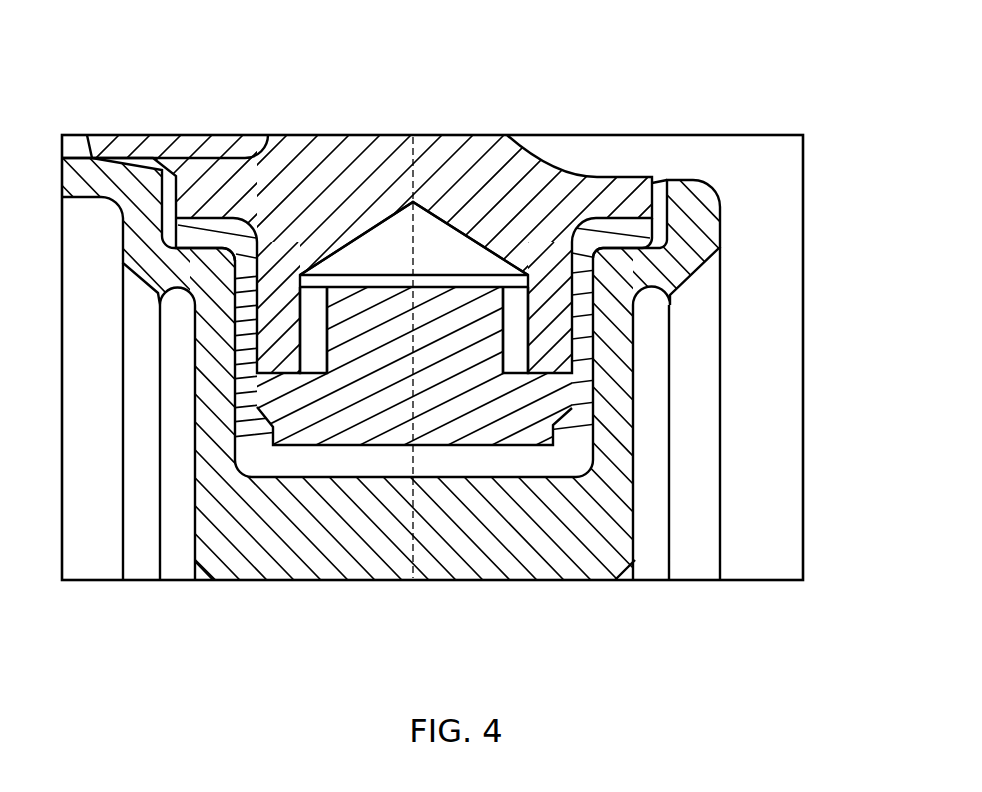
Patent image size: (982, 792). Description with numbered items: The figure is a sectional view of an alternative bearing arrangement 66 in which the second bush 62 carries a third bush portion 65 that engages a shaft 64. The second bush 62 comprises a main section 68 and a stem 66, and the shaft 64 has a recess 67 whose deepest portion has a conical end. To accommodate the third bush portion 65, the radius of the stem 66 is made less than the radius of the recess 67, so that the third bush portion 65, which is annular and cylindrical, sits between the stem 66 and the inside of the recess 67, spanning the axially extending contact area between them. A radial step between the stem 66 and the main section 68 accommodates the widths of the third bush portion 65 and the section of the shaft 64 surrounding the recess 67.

The second bush 62 is at (455, 370).
The shaft 64 is at (350, 197).
The third bush portion 65 is at (313, 317).
The bearing arrangement (also stem of the second bush) 66 is at (387, 317).
The recess 67 is at (469, 275).
The main section 68 is at (448, 430).